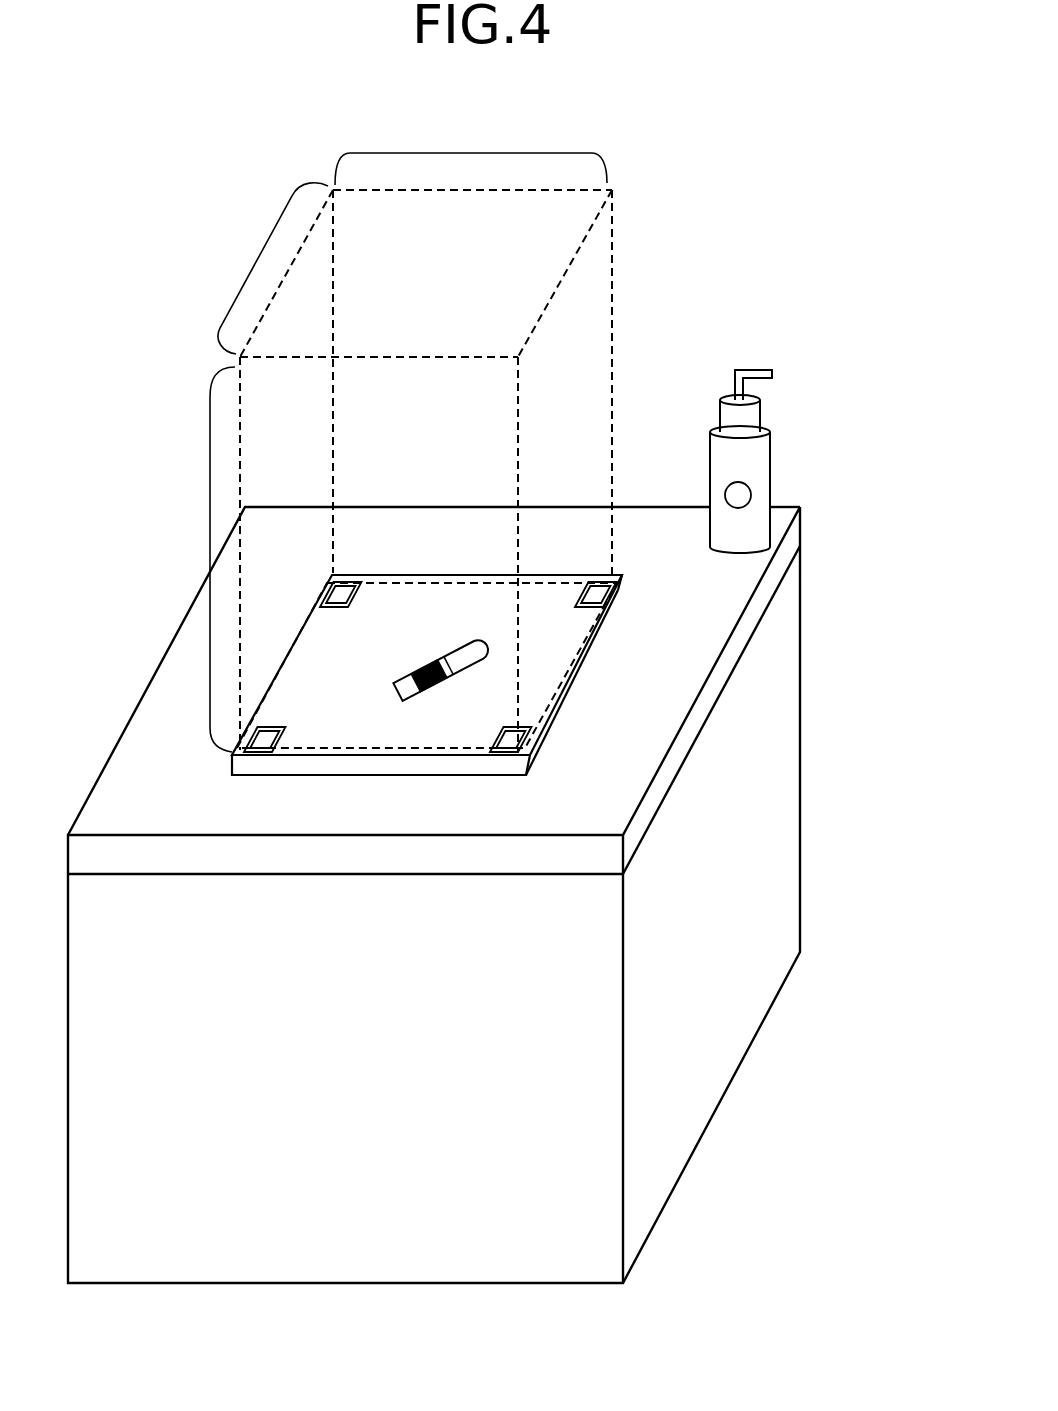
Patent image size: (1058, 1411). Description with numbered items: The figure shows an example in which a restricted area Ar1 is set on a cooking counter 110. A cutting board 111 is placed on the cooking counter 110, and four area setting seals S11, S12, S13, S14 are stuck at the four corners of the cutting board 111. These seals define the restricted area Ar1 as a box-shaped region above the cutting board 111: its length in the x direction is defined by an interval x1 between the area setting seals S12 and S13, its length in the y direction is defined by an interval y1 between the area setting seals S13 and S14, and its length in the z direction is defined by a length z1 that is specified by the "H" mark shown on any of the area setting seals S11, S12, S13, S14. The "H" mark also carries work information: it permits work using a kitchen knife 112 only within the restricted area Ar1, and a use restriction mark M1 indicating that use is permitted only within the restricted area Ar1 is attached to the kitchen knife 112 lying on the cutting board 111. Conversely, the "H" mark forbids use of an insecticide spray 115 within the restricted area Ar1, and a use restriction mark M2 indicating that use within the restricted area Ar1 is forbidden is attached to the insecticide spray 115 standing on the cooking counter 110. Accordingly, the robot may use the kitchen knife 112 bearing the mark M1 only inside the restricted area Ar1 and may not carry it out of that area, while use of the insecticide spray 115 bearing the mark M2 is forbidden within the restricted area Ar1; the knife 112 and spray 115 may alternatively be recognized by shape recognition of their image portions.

The cooking counter 110 is at (770, 723).
The cutting board 111 is at (228, 763).
The kitchen knife 112 is at (410, 646).
The insecticide spray 115 is at (792, 461).
The use restriction mark M1 is at (413, 678).
The use restriction mark M2 is at (751, 495).
The area setting seal S11 is at (513, 723).
The area setting seal S12 is at (260, 725).
The area setting seal S13 is at (332, 574).
The area setting seal S14 is at (595, 580).
The restricted area Ar1 is at (613, 318).
The interval x1 is at (257, 260).
The interval y1 is at (472, 153).
The length z1 is at (210, 525).